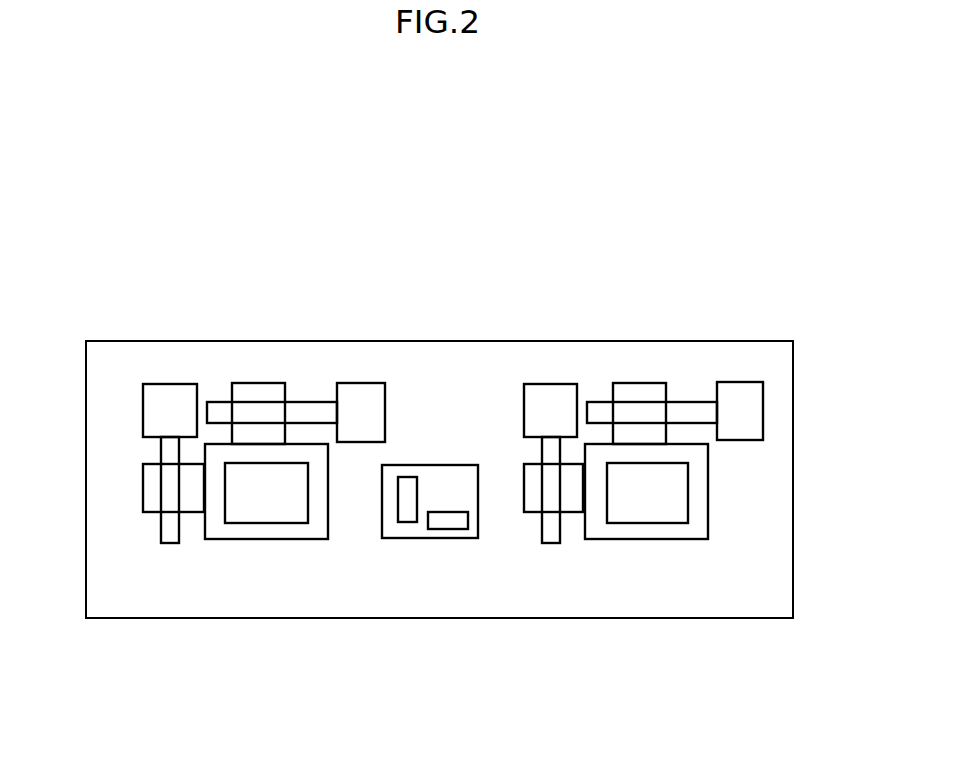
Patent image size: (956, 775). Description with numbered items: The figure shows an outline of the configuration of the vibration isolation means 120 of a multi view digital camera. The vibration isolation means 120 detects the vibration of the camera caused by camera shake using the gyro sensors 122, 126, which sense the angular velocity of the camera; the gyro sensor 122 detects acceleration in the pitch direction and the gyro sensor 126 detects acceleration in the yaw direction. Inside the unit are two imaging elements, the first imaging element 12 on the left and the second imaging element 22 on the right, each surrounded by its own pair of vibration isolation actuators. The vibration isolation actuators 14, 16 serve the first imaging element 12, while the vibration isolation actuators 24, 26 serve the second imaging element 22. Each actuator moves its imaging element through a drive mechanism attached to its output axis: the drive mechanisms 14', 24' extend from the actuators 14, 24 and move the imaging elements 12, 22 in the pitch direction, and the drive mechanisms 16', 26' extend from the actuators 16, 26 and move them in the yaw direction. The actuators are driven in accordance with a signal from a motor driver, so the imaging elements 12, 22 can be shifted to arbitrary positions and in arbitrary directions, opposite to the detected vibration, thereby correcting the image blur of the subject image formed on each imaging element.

The vibration isolation means 120 is at (822, 120).
The vibration isolation actuator 14 is at (137, 357).
The drive mechanism 14' is at (148, 516).
The vibration isolation actuator 16 is at (308, 289).
The drive mechanism 16' is at (272, 385).
The imaging element (1) 12 is at (257, 513).
The gyro sensor 126 is at (410, 482).
The gyro sensor 122 is at (448, 525).
The vibration isolation actuator 24 is at (572, 360).
The drive mechanism 24' is at (528, 516).
The vibration isolation actuator 26 is at (695, 287).
The drive mechanism 26' is at (652, 385).
The imaging element (2) 22 is at (637, 513).